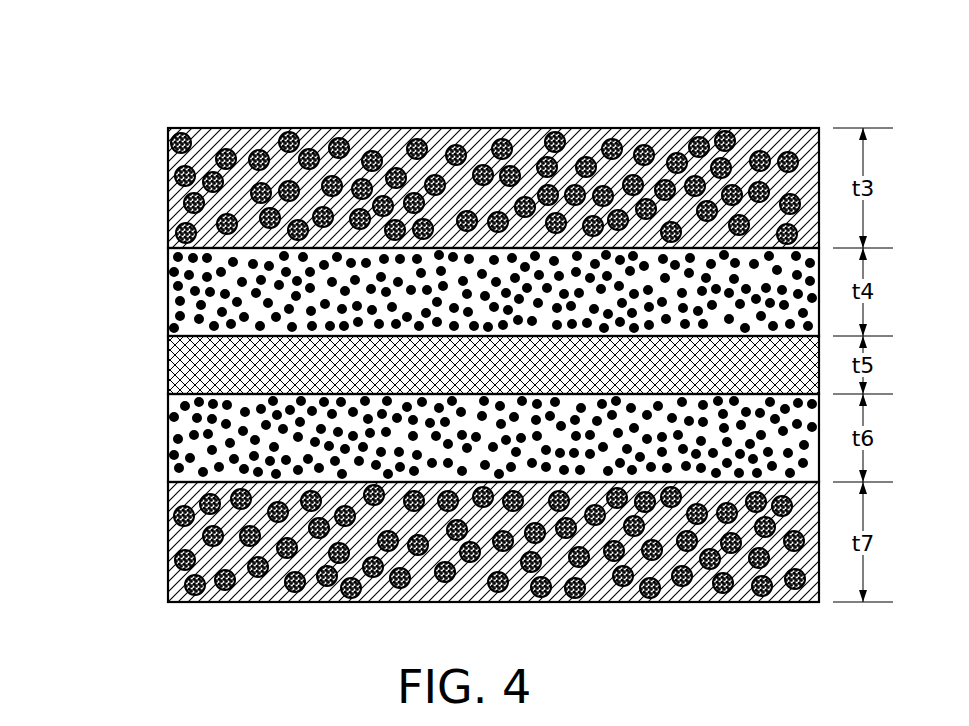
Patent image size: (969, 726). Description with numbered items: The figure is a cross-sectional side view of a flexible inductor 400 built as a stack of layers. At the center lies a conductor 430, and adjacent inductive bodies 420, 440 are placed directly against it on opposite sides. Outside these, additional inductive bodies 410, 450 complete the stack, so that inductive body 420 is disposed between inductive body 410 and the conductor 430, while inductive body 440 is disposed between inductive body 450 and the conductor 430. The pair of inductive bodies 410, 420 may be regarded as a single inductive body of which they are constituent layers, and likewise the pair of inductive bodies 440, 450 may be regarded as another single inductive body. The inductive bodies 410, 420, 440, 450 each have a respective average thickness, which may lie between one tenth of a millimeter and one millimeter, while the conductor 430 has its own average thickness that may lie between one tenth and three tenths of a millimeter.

The inductor 400 is at (82, 89).
The inductive body 410 is at (158, 189).
The inductive body 420 is at (158, 292).
The conductor 430 is at (158, 365).
The inductive body 440 is at (158, 438).
The inductive body 450 is at (158, 545).